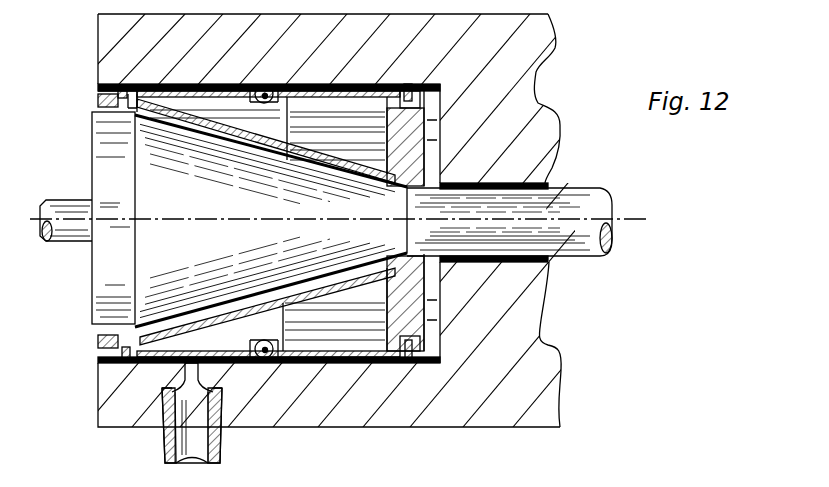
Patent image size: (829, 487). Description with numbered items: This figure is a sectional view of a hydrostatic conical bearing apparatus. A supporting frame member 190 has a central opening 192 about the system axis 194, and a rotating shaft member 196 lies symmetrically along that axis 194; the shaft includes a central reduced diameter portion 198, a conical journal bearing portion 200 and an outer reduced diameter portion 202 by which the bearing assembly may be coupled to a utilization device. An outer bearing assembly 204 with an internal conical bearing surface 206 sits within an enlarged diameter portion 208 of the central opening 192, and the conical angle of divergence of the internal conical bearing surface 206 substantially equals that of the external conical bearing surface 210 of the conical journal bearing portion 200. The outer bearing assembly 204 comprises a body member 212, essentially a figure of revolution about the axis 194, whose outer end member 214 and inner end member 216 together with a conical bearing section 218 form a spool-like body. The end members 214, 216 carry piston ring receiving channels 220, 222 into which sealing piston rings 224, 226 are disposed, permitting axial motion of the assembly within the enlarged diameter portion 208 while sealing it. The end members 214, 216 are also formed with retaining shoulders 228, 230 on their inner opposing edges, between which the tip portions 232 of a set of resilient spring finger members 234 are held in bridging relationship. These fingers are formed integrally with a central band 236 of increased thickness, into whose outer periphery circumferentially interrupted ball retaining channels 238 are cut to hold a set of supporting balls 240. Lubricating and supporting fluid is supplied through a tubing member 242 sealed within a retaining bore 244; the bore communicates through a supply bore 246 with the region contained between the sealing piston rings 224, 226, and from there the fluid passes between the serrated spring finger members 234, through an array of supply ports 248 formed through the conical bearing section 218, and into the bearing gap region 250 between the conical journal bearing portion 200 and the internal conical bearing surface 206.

The supporting frame member 190 is at (556, 48).
The central opening 192 is at (552, 183).
The system axis 194 is at (648, 219).
The rotating shaft member 196 is at (600, 189).
The central reduced diameter portion 198 is at (592, 257).
The conical journal bearing portion 200 is at (290, 212).
The outer reduced diameter portion 202 is at (62, 200).
The outer bearing assembly 204 is at (76, 86).
The internal conical bearing surface 206 is at (218, 133).
The enlarged diameter portion 208 is at (348, 84).
The external conical bearing surface 210 is at (330, 172).
The body member 212 is at (97, 98).
The outer end member 214 is at (98, 338).
The inner end member 216 is at (441, 115).
The conical bearing section 218 is at (316, 140).
The piston ring receiving channel 220 is at (122, 86).
The piston ring receiving channel 222 is at (404, 84).
The sealing piston ring 224 is at (135, 93).
The sealing piston ring 226 is at (420, 86).
The retaining shoulder 228 is at (125, 358).
The retaining shoulder 230 is at (410, 362).
The tip portions 232 is at (148, 363).
The resilient spring finger members 234 is at (250, 358).
The central band 236 is at (290, 318).
The ball retaining channels 238 is at (247, 92).
The supporting balls 240 is at (270, 86).
The tubing member 242 is at (222, 445).
The retaining bore 244 is at (163, 418).
The supply bore 246 is at (208, 375).
The supply ports 248 is at (258, 298).
The bearing gap region 250 is at (205, 303).